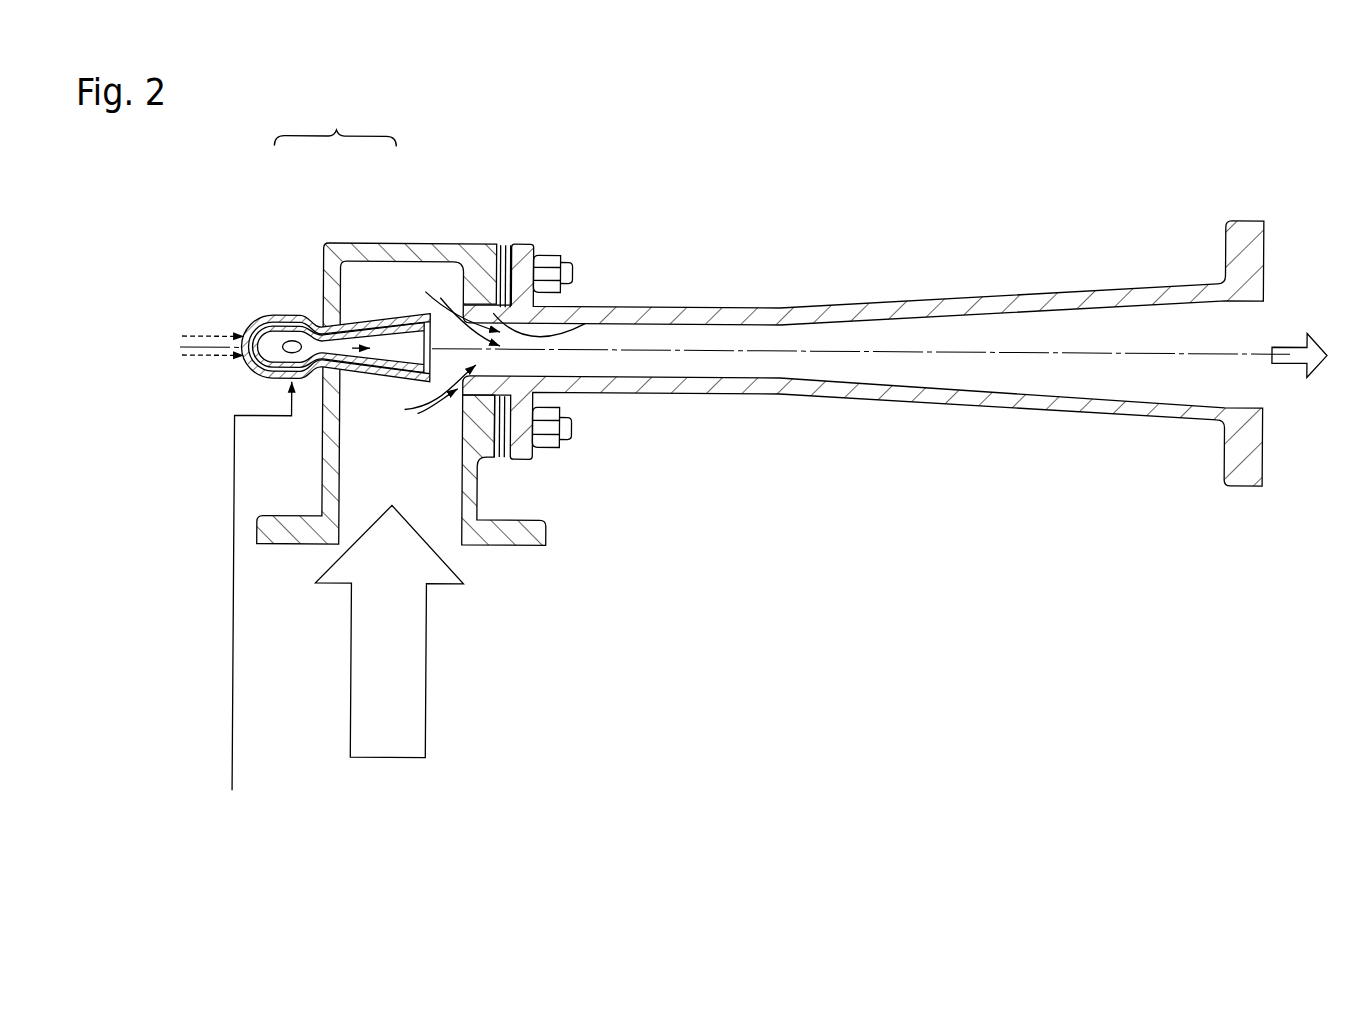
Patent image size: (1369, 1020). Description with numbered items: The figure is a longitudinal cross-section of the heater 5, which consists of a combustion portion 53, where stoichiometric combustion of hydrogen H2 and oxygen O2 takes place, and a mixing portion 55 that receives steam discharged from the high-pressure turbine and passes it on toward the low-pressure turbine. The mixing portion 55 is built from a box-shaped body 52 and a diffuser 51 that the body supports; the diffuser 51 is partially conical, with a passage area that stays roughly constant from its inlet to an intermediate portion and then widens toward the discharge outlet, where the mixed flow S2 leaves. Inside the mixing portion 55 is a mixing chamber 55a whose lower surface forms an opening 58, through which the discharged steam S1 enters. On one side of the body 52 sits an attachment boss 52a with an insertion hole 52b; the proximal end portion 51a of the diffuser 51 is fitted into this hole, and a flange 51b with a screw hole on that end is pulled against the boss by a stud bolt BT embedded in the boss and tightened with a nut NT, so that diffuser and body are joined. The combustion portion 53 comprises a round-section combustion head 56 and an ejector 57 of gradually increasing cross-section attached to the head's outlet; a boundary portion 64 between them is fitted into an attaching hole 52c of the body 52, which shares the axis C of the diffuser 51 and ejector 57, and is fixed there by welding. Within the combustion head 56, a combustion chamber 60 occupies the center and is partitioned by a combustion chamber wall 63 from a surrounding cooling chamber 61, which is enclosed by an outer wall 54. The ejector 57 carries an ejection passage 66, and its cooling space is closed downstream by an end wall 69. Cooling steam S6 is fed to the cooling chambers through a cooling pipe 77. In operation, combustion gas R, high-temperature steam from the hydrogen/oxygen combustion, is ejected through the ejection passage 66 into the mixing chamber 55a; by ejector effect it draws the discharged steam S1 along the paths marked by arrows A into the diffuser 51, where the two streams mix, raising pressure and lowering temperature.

The heater 5 is at (619, 203).
The diffuser 51 is at (795, 303).
The proximal end portion 51a is at (495, 317).
The flange 51b is at (520, 246).
The box-shaped body 52 is at (438, 242).
The attachment boss 52a is at (483, 268).
The insertion hole 52b is at (465, 390).
The attaching hole 52c is at (346, 325).
The combustion portion 53 is at (335, 119).
The outer wall 54 is at (276, 380).
The mixing portion 55 is at (413, 240).
The mixing chamber 55a is at (443, 481).
The combustion head 56 is at (280, 314).
The ejector 57 is at (377, 322).
The opening 58 is at (462, 547).
The combustion chamber 60 is at (294, 340).
The cooling chamber 61 is at (278, 315).
The combustion chamber wall 63 is at (262, 377).
The boundary portion 64 is at (322, 412).
The ejection passage 66 is at (400, 358).
The end wall 69 is at (650, 390).
The cooling pipe 77 is at (235, 633).
The arrows A is at (434, 400).
The combustion gas R is at (350, 381).
The axis C is at (724, 345).
The nut NT is at (552, 254).
The stud bolt BT is at (574, 262).
The discharged steam S1 is at (430, 683).
The combustion gas flow S2 is at (1288, 340).
The cooling steam S6 is at (237, 718).
The hydrogen H2 is at (213, 319).
The oxygen O2 is at (213, 376).